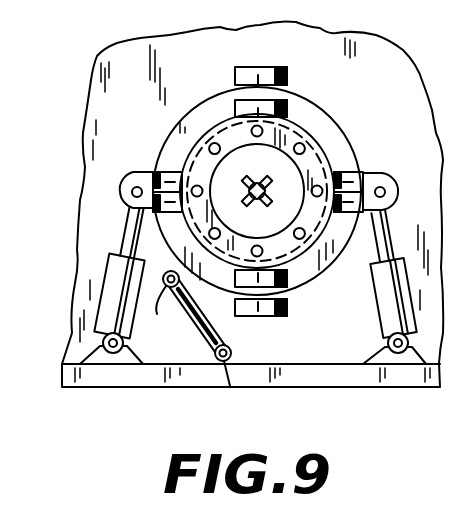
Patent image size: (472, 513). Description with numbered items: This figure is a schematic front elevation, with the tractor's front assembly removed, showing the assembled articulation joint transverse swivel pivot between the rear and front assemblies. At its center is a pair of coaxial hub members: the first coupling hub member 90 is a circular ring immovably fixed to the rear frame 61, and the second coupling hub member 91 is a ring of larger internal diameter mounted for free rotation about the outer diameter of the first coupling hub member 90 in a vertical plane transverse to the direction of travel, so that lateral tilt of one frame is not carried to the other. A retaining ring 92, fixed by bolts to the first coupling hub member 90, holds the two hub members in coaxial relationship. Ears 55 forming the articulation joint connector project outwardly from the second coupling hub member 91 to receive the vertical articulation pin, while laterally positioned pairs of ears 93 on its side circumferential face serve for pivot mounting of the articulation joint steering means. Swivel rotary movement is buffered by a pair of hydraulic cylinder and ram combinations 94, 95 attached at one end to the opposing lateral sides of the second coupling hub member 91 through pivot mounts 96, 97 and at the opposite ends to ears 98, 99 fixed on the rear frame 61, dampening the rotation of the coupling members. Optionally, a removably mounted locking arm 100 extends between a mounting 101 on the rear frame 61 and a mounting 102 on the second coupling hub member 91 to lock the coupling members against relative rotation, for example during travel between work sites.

The rear frame 61 is at (127, 58).
The second coupling hub member 91 is at (207, 101).
The retaining ring 92 is at (336, 172).
The first coupling hub member 90 is at (316, 132).
The ears 55 is at (287, 108).
The pairs of ears 93 is at (172, 171).
The pivot mount 96 is at (118, 186).
The pivot mount 97 is at (393, 193).
The hydraulic cylinder and ram combination 94 is at (115, 295).
The hydraulic cylinder and ram combination 95 is at (391, 305).
The ear 98 is at (95, 366).
The ear 99 is at (412, 365).
The locking arm 100 is at (215, 332).
The mounting 101 is at (232, 388).
The mounting 102 is at (161, 312).